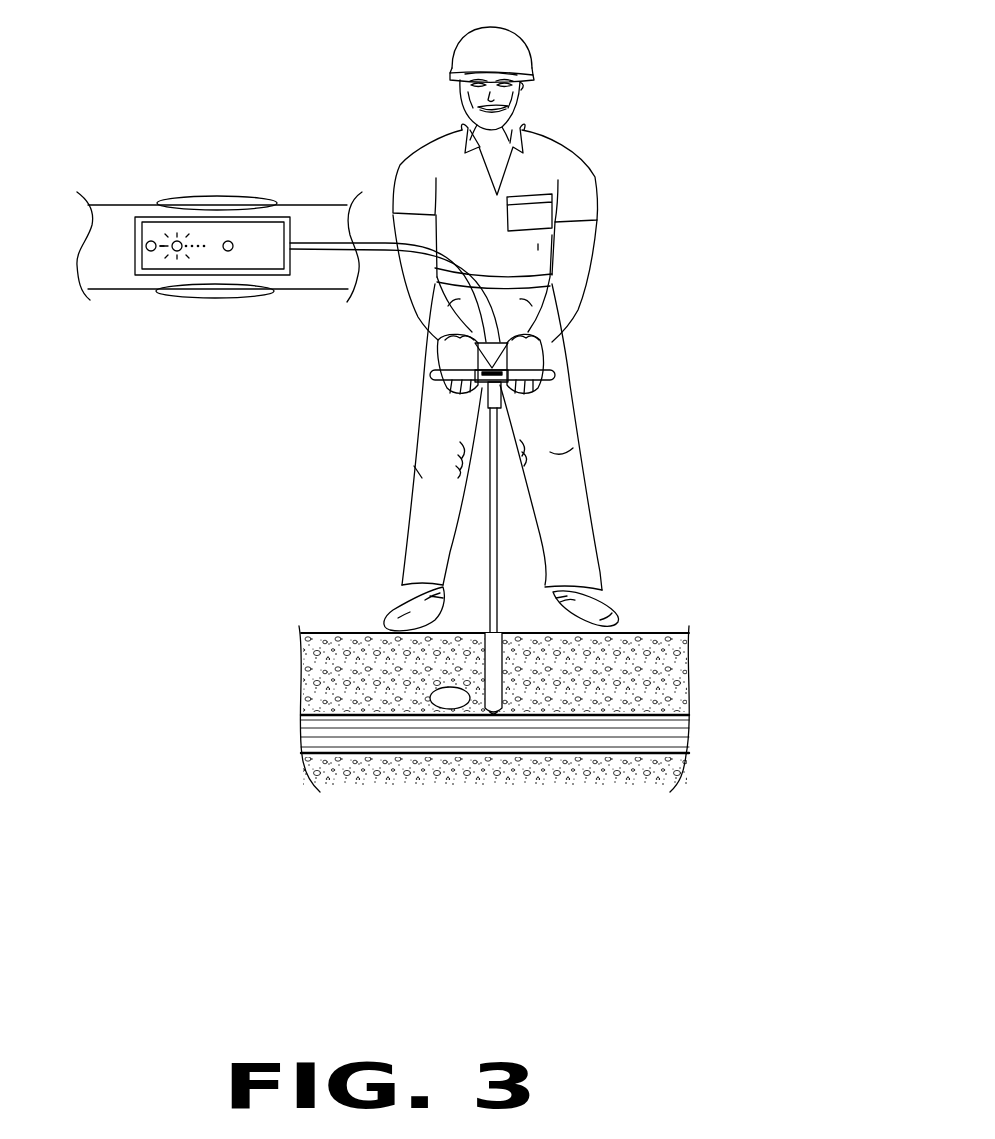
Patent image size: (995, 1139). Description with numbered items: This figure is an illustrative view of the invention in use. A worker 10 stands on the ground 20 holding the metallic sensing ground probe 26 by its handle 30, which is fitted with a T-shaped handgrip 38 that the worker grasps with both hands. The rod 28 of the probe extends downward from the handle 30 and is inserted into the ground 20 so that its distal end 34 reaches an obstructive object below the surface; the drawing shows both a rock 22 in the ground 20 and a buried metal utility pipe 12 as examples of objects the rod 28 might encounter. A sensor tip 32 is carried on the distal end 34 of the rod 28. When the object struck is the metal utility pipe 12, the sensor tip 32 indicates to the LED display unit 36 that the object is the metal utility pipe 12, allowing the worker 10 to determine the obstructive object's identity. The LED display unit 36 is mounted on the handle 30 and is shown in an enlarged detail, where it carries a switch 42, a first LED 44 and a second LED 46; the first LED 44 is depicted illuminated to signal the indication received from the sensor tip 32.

The worker 10 is at (560, 150).
The metal utility pipe 12 is at (314, 735).
The ground 20 is at (352, 642).
The rock in ground 22 is at (452, 694).
The metallic sensing ground probe 26 is at (499, 568).
The rod of probe 28 is at (498, 493).
The handle of probe 30 is at (112, 226).
The sensor tip 32 is at (495, 714).
The distal end of rod 34 is at (497, 698).
The LED display unit 36 is at (273, 230).
The T-shaped handgrip 38 is at (502, 404).
The switch 42 is at (153, 238).
The first LED 44 is at (172, 253).
The second LED 46 is at (228, 253).